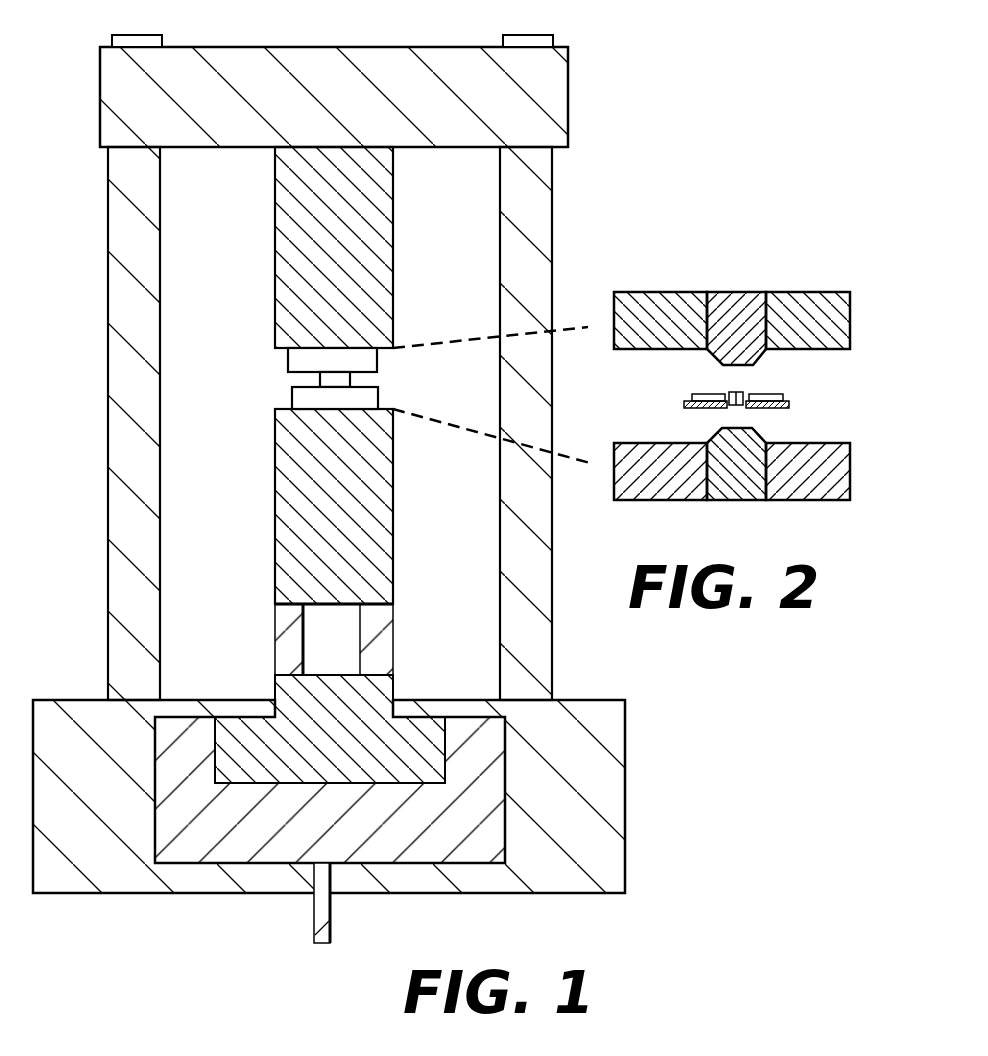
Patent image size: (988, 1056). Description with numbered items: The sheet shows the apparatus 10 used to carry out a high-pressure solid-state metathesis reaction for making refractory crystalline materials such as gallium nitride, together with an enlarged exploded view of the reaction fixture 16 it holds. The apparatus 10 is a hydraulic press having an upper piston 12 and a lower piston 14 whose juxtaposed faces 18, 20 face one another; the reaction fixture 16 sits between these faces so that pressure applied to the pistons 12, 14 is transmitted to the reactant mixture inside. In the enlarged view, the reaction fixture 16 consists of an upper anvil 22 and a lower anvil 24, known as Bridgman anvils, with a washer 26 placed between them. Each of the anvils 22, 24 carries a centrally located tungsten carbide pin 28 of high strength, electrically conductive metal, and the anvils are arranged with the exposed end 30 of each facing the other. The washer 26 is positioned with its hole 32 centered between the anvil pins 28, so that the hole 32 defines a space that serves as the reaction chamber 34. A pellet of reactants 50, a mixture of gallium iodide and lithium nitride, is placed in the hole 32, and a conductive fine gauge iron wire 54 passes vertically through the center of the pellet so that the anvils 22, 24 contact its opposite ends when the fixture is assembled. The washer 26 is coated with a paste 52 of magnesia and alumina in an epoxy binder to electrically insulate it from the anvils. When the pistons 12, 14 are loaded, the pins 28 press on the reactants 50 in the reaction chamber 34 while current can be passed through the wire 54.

In FIG. 1, the apparatus 10 is at (574, 116).
In FIG. 1, the upper piston 12 is at (394, 232).
In FIG. 1, the lower piston 14 is at (395, 502).
In FIG. 1, the reaction fixture 16 is at (378, 380).
In FIG. 2, the reaction fixture 16 is at (735, 292).
In FIG. 1, the face of upper piston 18 is at (287, 351).
In FIG. 1, the face of lower piston 20 is at (289, 405).
In FIG. 2, the upper anvil 22 is at (686, 292).
In FIG. 2, the lower anvil 24 is at (823, 500).
In FIG. 2, the washer 26 is at (692, 397).
In FIG. 2, the pin 28 is at (763, 355).
In FIG. 2, the exposed end 30 is at (723, 365).
In FIG. 2, the hole 32 is at (747, 409).
In FIG. 2, the reaction chamber 34 is at (730, 382).
In FIG. 2, the reactants 50 is at (731, 407).
In FIG. 2, the paste 52 is at (790, 405).
In FIG. 2, the iron wire 54 is at (738, 392).